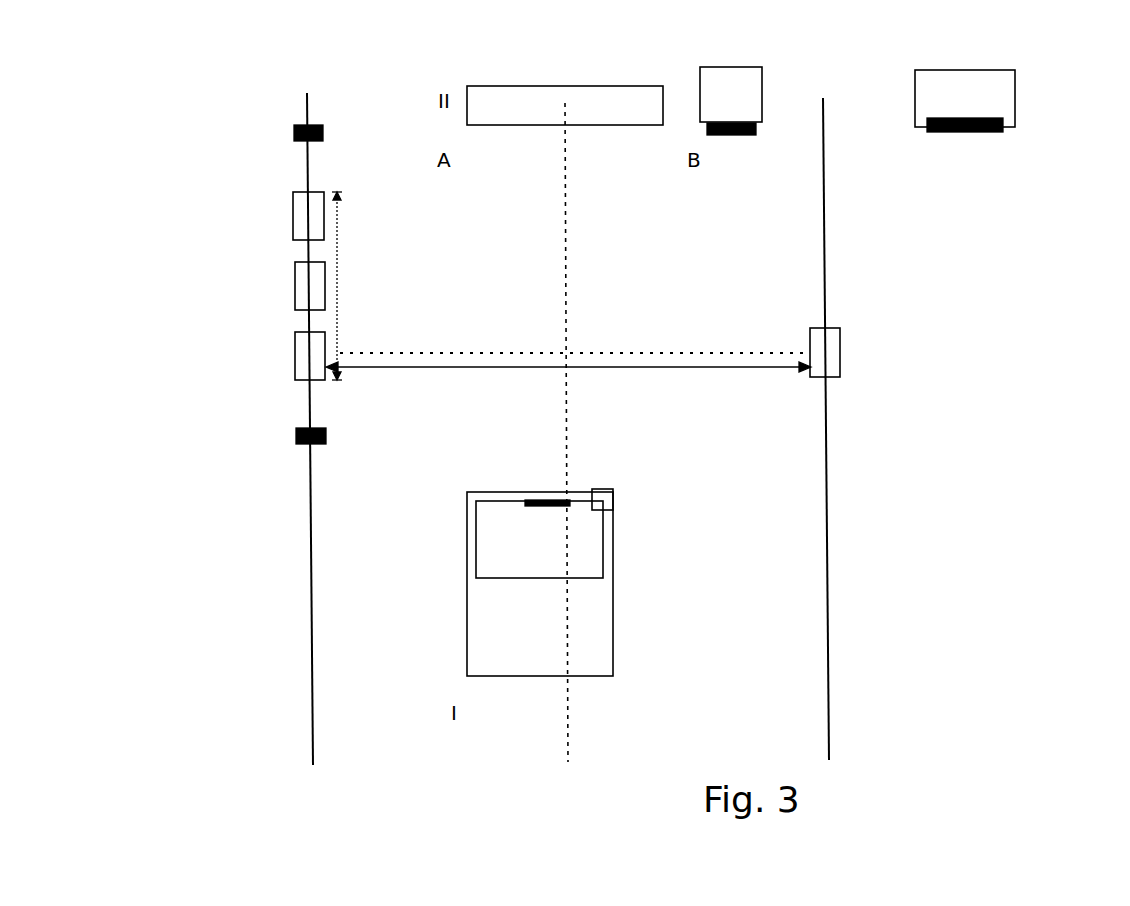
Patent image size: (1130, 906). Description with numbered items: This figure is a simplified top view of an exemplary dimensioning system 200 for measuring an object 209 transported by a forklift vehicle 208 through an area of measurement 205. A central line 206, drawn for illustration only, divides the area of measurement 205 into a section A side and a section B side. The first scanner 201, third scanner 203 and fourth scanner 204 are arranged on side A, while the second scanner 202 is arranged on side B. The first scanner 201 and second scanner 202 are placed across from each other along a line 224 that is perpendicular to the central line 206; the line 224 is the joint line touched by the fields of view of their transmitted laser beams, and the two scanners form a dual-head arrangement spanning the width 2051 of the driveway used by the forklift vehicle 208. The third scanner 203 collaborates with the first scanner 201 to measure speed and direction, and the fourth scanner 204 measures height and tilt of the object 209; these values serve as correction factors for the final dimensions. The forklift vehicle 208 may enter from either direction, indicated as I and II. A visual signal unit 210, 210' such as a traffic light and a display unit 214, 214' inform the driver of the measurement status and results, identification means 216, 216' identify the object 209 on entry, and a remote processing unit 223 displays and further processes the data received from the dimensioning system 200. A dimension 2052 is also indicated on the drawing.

The dimensioning system 200 is at (962, 310).
The first scanner 201 is at (295, 362).
The second scanner 202 is at (840, 357).
The third scanner 203 is at (293, 217).
The fourth scanner 204 is at (295, 292).
The area of measurement 205 is at (707, 322).
The central line 206 is at (568, 243).
The forklift vehicle 208 is at (598, 665).
The object 209 is at (590, 553).
The visual signal unit 210 is at (778, 78).
The visual signal unit 210' is at (662, 498).
The display unit 214 is at (576, 72).
The display unit 214' is at (611, 527).
The identification means 216 is at (251, 416).
The identification means 216' is at (255, 111).
The remote processing unit 223 is at (1015, 107).
The line 224 is at (706, 352).
The width 2051 is at (390, 368).
The vertical distance 2052 is at (337, 213).